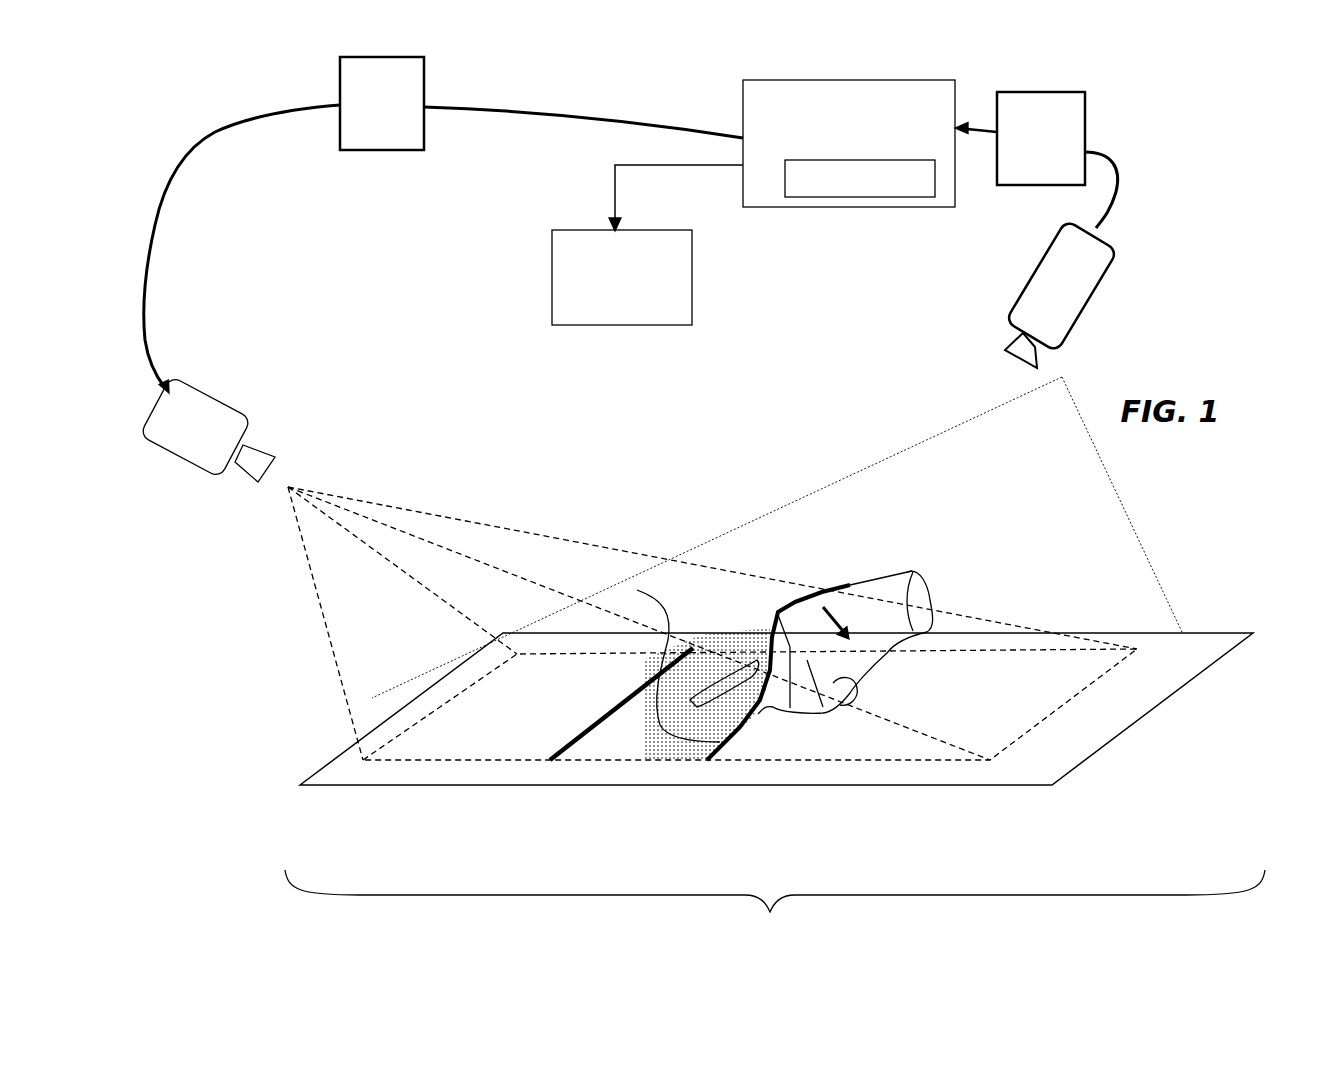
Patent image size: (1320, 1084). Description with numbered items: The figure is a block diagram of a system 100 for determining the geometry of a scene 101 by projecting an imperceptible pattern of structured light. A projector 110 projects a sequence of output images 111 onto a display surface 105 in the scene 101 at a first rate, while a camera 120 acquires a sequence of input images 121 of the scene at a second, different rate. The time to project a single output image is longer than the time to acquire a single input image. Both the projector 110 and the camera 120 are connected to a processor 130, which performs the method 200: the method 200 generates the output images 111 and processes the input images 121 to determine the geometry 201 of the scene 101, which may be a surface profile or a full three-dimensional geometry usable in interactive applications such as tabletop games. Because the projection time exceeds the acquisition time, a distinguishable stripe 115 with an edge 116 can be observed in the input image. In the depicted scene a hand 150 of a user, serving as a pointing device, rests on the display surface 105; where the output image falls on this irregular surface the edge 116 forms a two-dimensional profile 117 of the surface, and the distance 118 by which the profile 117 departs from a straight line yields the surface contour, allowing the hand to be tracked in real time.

The system 100 is at (1147, 471).
The scene 101 is at (775, 914).
The display surface 105 is at (1000, 787).
The projector 110 is at (253, 412).
The output images 111 is at (377, 150).
The stripe 115 is at (628, 760).
The edge 116 is at (620, 707).
The 2D profile 117 is at (773, 623).
The distance d 118 is at (825, 610).
The camera 120 is at (1093, 293).
The input images 121 is at (1032, 185).
The processor 130 is at (828, 207).
The hand 150 is at (915, 600).
The method 200 is at (915, 197).
The geometry 201 is at (637, 325).